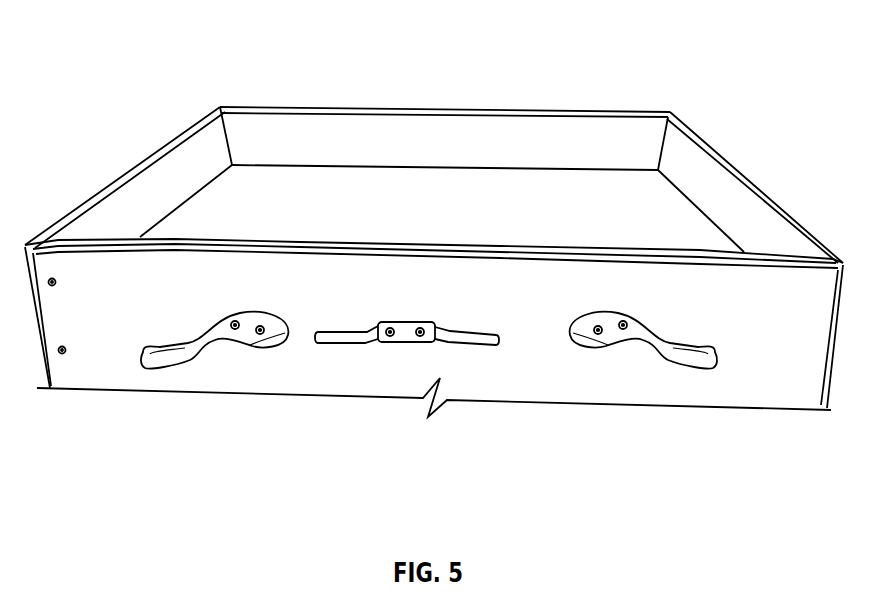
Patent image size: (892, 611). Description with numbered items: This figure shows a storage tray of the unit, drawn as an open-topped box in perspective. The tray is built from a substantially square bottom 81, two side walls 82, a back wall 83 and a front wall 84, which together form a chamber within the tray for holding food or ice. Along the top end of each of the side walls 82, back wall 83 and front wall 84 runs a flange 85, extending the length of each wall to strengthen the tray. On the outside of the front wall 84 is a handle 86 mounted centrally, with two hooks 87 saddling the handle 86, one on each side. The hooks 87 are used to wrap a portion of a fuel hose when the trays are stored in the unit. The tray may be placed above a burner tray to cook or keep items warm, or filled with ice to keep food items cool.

The bottom 81 is at (398, 190).
The side walls 82 is at (120, 210).
The back wall 83 is at (502, 133).
The front wall 84 is at (565, 358).
The flange 85 is at (170, 142).
The handle 86 is at (478, 348).
The hooks 87 is at (202, 348).